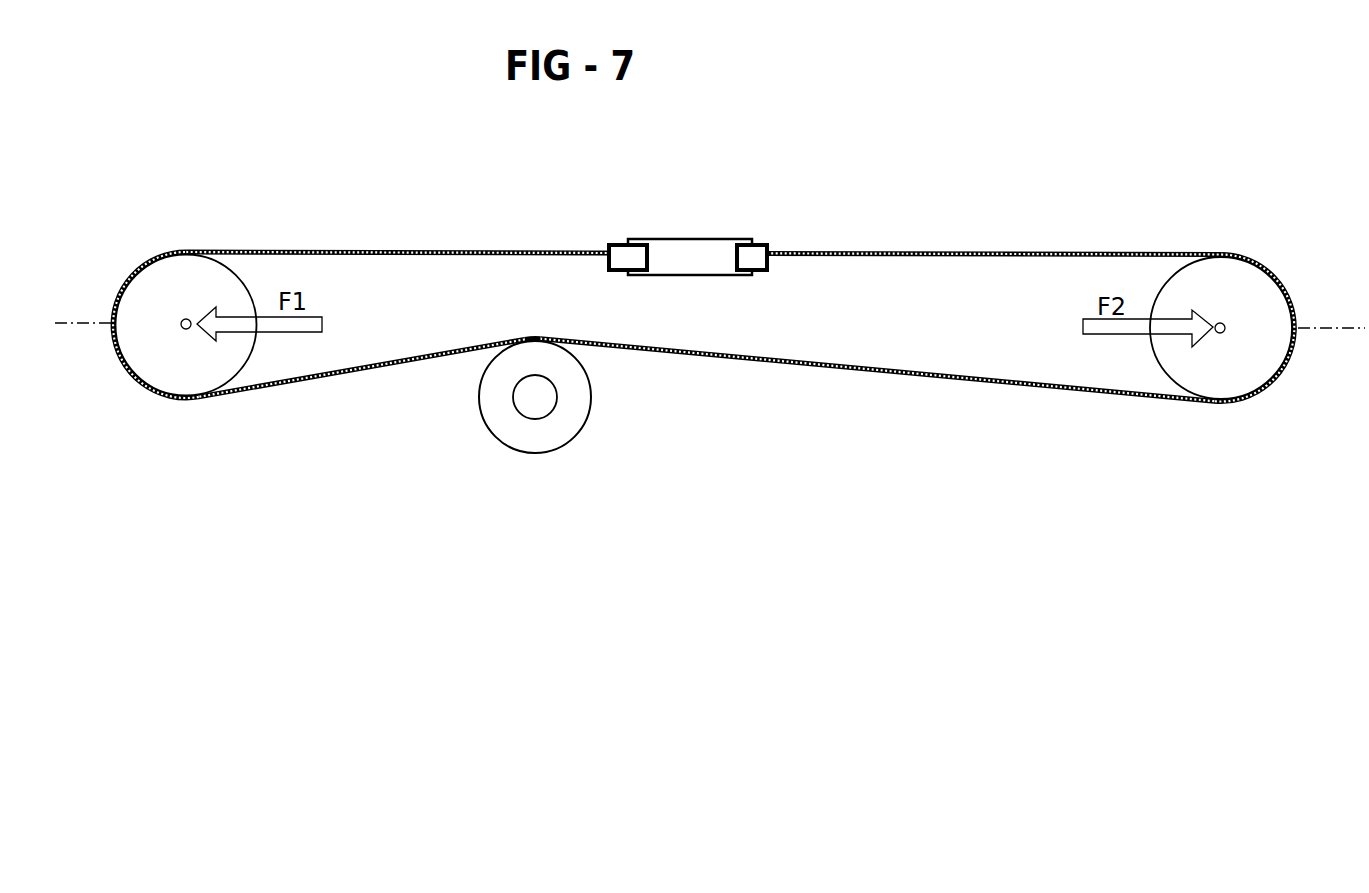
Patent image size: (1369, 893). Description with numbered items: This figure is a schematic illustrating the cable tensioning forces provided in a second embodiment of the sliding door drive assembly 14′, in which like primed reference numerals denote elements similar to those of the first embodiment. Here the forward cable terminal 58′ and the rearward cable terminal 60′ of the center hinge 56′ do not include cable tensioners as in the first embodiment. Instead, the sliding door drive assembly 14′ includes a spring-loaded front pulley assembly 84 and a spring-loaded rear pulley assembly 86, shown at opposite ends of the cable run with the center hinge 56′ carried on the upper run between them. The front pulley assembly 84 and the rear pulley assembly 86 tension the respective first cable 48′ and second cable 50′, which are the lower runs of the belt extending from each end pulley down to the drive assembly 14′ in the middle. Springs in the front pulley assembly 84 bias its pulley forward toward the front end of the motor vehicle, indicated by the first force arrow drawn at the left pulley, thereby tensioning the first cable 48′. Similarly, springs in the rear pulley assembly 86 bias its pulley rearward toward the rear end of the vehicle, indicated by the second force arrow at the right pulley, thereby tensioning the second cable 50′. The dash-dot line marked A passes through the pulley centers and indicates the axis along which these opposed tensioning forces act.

The sliding door drive assembly 14′ is at (483, 460).
The first cable 48′ is at (348, 375).
The second cable 50′ is at (807, 373).
The center hinge 56′ is at (693, 238).
The forward cable terminal 58′ is at (617, 244).
The rearward cable terminal 60′ is at (758, 256).
The spring-loaded front pulley assembly 84 is at (150, 410).
The spring-loaded rear pulley assembly 86 is at (1160, 215).
The axis A is at (63, 320).